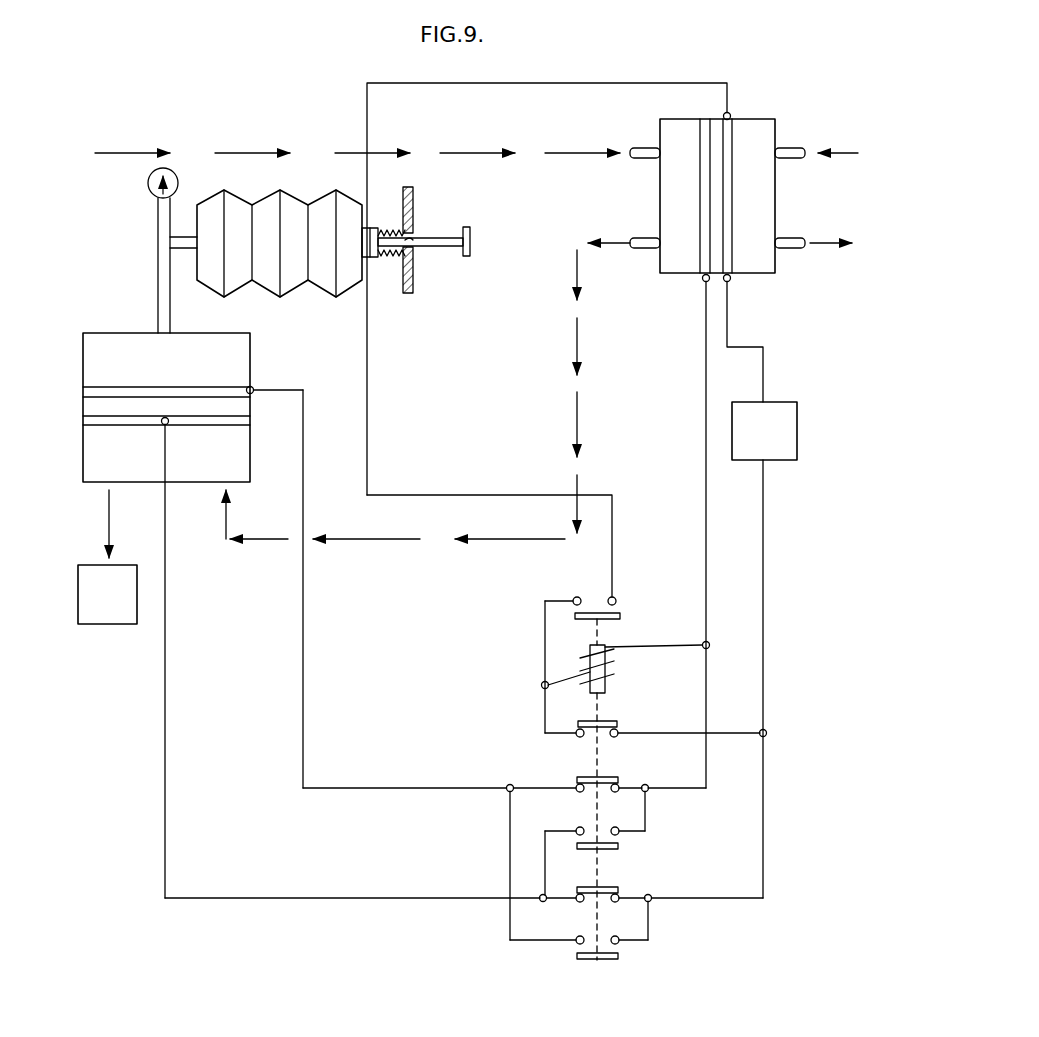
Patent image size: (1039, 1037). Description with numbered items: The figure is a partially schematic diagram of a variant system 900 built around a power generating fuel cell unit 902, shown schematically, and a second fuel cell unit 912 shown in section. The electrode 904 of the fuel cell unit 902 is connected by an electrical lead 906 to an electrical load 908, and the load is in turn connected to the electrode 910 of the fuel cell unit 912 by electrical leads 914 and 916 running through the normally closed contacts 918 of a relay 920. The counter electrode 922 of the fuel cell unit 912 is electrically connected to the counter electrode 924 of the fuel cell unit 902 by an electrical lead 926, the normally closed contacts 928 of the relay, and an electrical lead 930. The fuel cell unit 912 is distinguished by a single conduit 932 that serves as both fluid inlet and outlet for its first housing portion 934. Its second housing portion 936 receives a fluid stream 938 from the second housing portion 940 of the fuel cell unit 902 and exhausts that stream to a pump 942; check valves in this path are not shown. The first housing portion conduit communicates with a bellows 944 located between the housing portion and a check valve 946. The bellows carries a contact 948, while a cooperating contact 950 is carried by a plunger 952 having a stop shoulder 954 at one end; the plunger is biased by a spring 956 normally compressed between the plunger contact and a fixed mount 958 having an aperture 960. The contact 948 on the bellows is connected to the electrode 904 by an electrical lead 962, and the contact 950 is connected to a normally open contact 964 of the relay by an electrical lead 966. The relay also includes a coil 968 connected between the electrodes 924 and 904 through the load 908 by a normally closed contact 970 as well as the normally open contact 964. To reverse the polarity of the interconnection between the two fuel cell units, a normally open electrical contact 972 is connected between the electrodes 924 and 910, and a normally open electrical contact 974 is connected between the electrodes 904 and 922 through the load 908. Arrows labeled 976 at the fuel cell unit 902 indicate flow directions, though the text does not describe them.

The variant system 900 is at (336, 122).
The power generating fuel cell unit 902 is at (762, 112).
The electrode 904 is at (728, 192).
The electrical lead 906 is at (732, 306).
The electrical load 908 is at (800, 430).
The electrode 910 is at (124, 417).
The fuel cell unit 912 is at (114, 328).
The electrical lead 914 is at (766, 802).
The electrical lead 916 is at (360, 900).
The normally closed contacts 918 is at (584, 904).
The relay 920 is at (618, 686).
The counter electrode 922 is at (144, 386).
The counter electrode 924 is at (704, 190).
The electrical lead 926 is at (304, 644).
The normally closed contacts 928 is at (584, 794).
The electrical lead 930 is at (704, 444).
The single conduit 932 is at (158, 264).
The first housing portion 934 is at (240, 353).
The second housing portion 936 is at (238, 466).
The fluid stream 938 is at (128, 153).
The second housing portion 940 is at (664, 128).
The pump 942 is at (104, 616).
The bellows 944 is at (266, 196).
The check valve 946 is at (148, 184).
The contact 948 is at (364, 282).
The cooperating contact 950 is at (378, 228).
The plunger 952 is at (448, 248).
The stop shoulder 954 is at (470, 232).
The spring 956 is at (396, 262).
The fixed mount 958 is at (414, 282).
The aperture 960 is at (414, 240).
The electrical lead 962 is at (594, 83).
The normally open contact 964 is at (598, 604).
The electrical lead 966 is at (492, 494).
The coil 968 is at (618, 660).
The normally closed contact 970 is at (610, 738).
The normally open electrical contact 972 is at (606, 826).
The normally open electrical contact 974 is at (606, 934).
The coolant flow arrows 976 is at (840, 150).